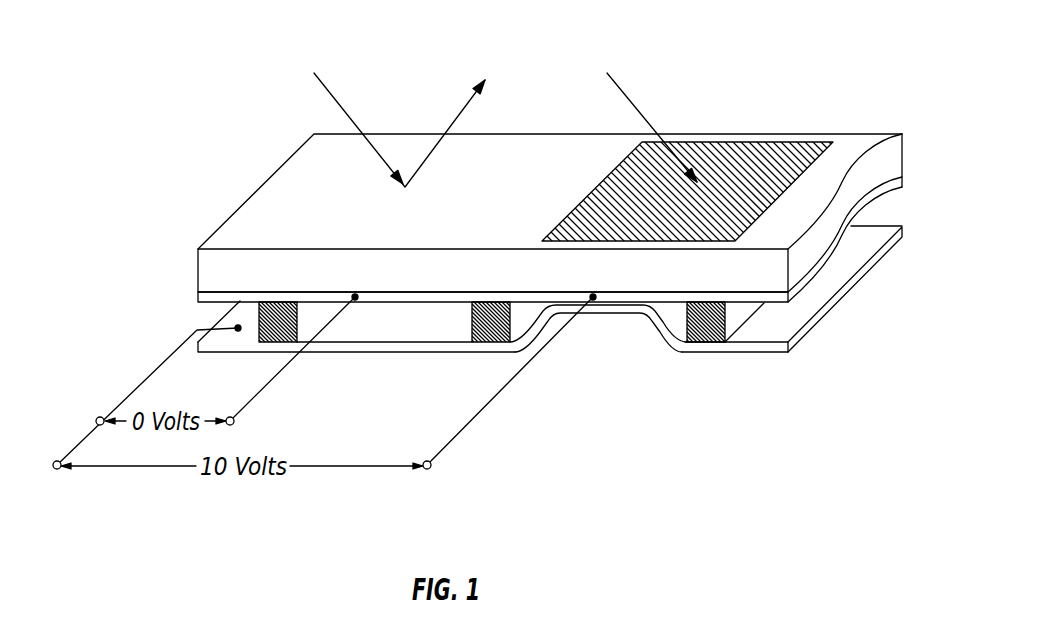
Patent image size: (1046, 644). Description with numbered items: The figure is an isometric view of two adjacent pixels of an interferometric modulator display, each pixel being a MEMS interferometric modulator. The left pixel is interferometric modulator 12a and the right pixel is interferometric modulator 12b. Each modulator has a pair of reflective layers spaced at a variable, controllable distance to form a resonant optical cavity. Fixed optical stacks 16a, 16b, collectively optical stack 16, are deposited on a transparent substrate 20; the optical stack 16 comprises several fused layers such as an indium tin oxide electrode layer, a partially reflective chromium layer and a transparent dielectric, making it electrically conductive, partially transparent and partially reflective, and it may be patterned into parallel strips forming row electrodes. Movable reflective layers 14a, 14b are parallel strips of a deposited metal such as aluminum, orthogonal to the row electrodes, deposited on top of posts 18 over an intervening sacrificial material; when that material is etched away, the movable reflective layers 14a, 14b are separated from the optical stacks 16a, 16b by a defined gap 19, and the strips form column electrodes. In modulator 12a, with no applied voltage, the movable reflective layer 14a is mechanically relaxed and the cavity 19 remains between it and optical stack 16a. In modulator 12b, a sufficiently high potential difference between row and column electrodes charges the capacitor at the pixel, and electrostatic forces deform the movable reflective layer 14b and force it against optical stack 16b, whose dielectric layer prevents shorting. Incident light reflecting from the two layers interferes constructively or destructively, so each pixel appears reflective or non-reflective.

The interferometric modulator 12a is at (306, 203).
The interferometric modulator 12b is at (752, 160).
The movable reflective layer 14a is at (315, 347).
The movable reflective layer 14b is at (540, 323).
The optical stack 16 is at (200, 300).
The optical stack 16a is at (380, 298).
The optical stack 16b is at (571, 295).
The posts 18 is at (282, 335).
The gap 19 is at (424, 325).
The transparent substrate 20 is at (830, 208).